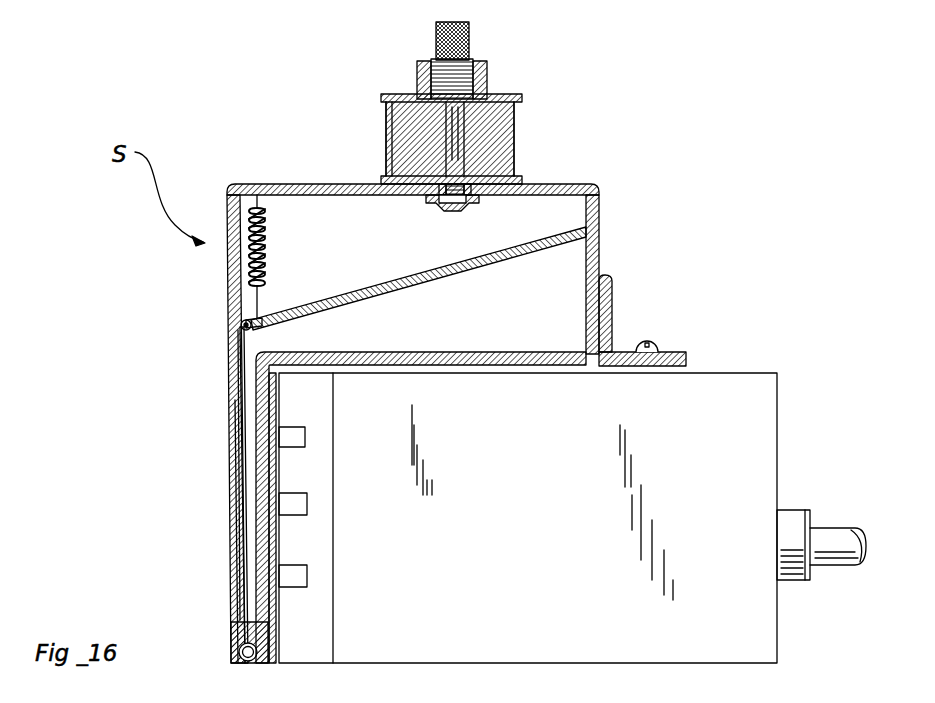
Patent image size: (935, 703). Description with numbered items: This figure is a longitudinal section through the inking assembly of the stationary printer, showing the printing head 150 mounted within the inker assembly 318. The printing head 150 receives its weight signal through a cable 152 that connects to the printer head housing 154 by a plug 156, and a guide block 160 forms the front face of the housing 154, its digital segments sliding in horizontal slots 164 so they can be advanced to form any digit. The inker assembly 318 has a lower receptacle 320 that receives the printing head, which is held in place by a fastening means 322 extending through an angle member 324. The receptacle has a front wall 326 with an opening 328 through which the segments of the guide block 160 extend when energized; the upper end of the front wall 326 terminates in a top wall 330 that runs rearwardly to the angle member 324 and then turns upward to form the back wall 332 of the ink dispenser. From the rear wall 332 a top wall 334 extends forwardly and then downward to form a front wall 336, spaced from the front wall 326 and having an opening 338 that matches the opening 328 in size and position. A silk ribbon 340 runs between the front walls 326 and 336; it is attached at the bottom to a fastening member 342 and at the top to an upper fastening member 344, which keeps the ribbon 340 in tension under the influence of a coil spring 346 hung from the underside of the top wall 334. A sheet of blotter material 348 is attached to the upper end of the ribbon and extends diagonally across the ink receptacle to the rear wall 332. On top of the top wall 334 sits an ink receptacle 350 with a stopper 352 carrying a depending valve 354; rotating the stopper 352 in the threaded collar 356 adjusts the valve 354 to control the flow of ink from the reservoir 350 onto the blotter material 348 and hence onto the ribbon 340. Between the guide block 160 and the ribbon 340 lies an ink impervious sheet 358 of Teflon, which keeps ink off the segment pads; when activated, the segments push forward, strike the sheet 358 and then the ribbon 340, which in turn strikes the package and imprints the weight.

The printing head 150 is at (790, 408).
The cable 152 is at (822, 528).
The printer head housing 154 is at (770, 446).
The plug 156 is at (800, 580).
The guide block 160 is at (328, 595).
The horizontal slots 164 is at (305, 440).
The inker assembly 318 is at (640, 240).
The lower receptacle 320 is at (524, 374).
The fastening means 322 is at (658, 346).
The angle member 324 is at (612, 284).
The front wall 326 is at (243, 378).
The opening 328 is at (240, 411).
The top wall 330 is at (345, 356).
The back wall 332 is at (592, 226).
The top wall 334 is at (310, 185).
The front wall 336 is at (232, 340).
The opening 338 is at (238, 397).
The silk ribbon 340 is at (236, 470).
The fastening member 342 is at (258, 632).
The upper fastening member 344 is at (244, 323).
The coil spring 346 is at (264, 238).
The blotter material 348 is at (310, 300).
The ink receptacle 350 is at (520, 146).
The stopper 352 is at (470, 42).
The depending valve 354 is at (418, 187).
The threaded collar 356 is at (488, 78).
The ink impervious sheet 358 is at (279, 400).